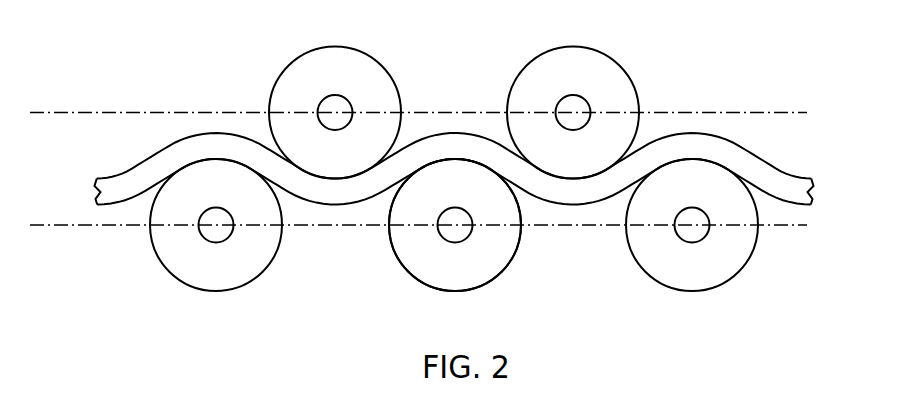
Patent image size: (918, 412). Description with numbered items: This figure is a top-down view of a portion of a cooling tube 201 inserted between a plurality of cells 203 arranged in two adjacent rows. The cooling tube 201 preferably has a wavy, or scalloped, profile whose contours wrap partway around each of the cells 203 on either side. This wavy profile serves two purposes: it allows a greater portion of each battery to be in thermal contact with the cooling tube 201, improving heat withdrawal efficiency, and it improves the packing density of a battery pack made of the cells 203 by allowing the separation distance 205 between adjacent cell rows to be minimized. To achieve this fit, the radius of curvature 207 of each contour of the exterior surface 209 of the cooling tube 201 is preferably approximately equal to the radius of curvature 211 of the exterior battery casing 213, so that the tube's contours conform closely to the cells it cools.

The cooling tube 201 is at (717, 151).
The cells 203 is at (312, 52).
The separation distance 205 is at (45, 116).
The radius of curvature 207 is at (454, 225).
The exterior surface 209 is at (437, 148).
The radius of curvature 211 is at (502, 201).
The exterior battery casing 213 is at (522, 217).